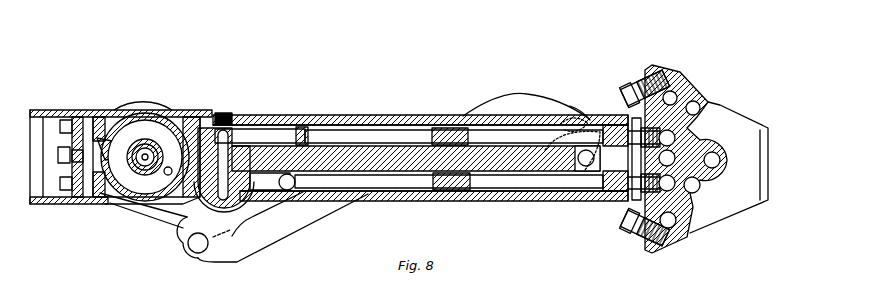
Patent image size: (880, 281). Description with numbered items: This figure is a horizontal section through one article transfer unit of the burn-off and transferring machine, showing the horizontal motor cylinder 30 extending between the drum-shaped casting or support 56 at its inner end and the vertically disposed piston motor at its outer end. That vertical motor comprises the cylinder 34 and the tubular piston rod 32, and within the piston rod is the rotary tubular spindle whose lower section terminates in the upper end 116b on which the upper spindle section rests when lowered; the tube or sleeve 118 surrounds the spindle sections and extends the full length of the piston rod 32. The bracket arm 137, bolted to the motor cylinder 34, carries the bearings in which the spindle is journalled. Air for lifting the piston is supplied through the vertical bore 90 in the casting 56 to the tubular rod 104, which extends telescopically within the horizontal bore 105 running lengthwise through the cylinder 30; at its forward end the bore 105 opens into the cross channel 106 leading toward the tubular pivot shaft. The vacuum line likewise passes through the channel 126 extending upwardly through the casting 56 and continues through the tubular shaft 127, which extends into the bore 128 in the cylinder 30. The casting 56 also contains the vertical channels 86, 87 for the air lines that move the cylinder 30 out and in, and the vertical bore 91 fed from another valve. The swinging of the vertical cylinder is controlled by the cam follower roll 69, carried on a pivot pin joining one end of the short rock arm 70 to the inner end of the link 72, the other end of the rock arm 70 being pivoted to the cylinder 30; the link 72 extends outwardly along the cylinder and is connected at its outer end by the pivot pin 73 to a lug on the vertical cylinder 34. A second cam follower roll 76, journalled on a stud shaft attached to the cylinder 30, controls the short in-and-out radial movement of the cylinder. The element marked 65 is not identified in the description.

The bracket arm 137 is at (76, 111).
The upper end of the lower spindle section 116b is at (143, 148).
The piston rod 32 is at (149, 148).
The tube or sleeve 118 is at (135, 166).
The cylinder 34 is at (136, 172).
The cross channel 106 is at (211, 170).
The cylinder 30 is at (393, 116).
The horizontal bore 105 is at (266, 136).
The tubular rod 104 is at (418, 140).
The bore 128 is at (265, 183).
The tubular shaft 127 is at (506, 180).
The cam follower roll 76 is at (547, 178).
The cam follower roll 69 is at (578, 113).
The rock arm 70 is at (596, 126).
The lever 65 is at (187, 216).
The pivot pin 73 is at (192, 244).
The link 72 is at (330, 207).
The drum-shaped casting or support 56 is at (707, 101).
The vertical bore 90 is at (670, 139).
The vertical channel 87 is at (669, 159).
The vertical channel 86 is at (715, 160).
The channel 126 is at (670, 183).
The vertical bore 91 is at (694, 185).